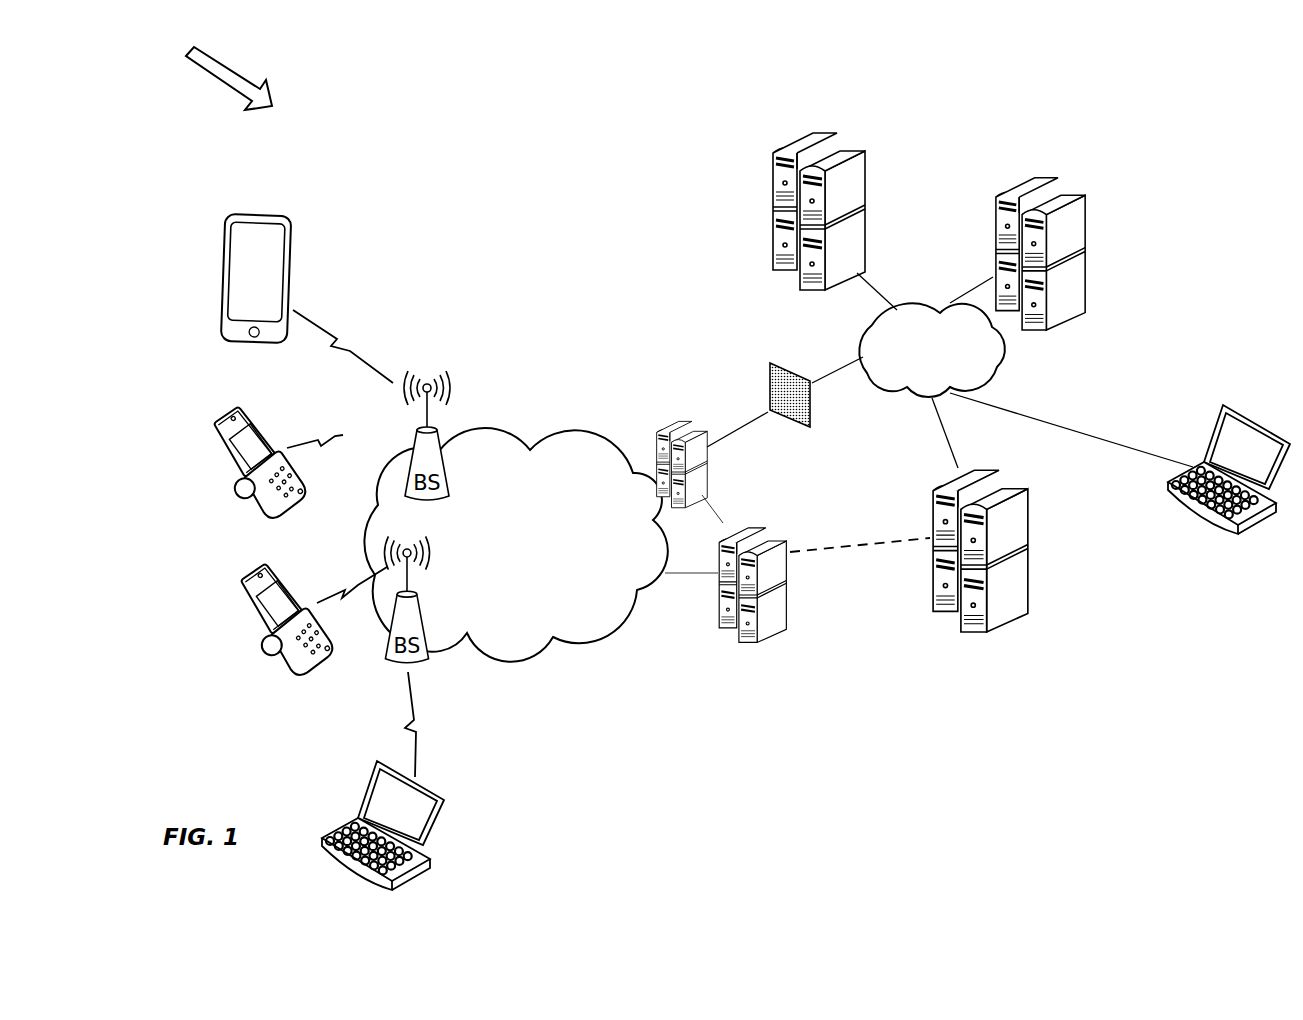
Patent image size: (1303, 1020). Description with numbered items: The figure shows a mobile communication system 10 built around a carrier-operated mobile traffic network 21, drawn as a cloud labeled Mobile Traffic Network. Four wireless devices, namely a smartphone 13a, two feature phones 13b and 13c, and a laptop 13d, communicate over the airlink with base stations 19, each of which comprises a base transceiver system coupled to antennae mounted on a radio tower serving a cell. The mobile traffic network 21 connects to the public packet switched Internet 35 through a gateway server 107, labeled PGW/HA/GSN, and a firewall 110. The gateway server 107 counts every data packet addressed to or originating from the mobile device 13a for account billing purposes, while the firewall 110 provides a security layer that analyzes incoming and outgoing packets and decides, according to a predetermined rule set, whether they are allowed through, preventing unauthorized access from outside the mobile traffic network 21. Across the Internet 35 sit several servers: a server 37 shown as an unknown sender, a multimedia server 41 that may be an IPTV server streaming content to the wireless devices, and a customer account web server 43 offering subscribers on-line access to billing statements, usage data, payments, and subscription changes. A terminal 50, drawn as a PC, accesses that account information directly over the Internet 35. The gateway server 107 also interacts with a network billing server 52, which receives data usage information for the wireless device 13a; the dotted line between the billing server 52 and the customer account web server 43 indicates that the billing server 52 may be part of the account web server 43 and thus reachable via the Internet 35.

The mobile communication system 10 is at (218, 72).
The wireless device 13a is at (222, 256).
The wireless device 13b is at (212, 440).
The wireless device 13c is at (237, 593).
The wireless device 13d is at (345, 817).
The base station 19 is at (413, 452).
The mobile traffic network 21 is at (530, 425).
The Internet 35 is at (1007, 352).
The server 37 is at (840, 136).
The multimedia server 41 is at (1092, 250).
The customer account web server 43 is at (932, 516).
The terminal 50 is at (1202, 522).
The billing server 52 is at (765, 640).
The gateway server 107 is at (676, 412).
The firewall 110 is at (770, 362).